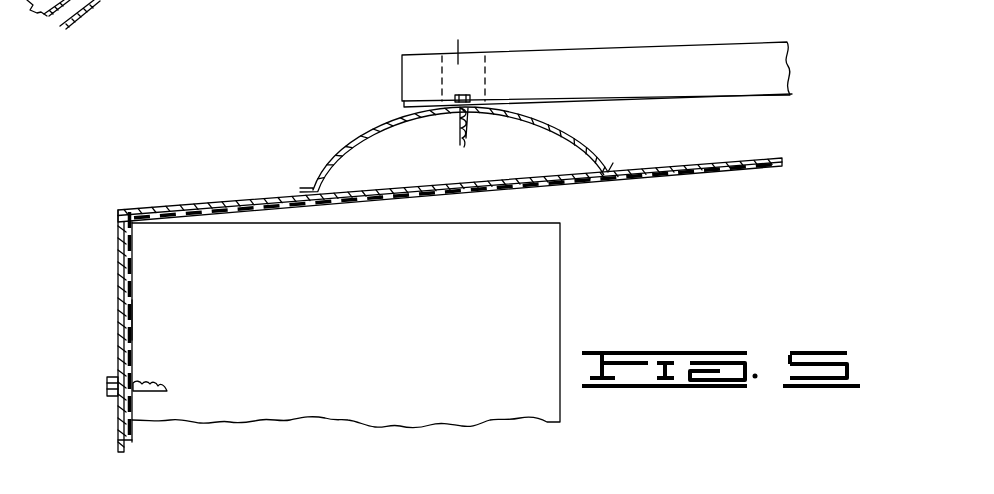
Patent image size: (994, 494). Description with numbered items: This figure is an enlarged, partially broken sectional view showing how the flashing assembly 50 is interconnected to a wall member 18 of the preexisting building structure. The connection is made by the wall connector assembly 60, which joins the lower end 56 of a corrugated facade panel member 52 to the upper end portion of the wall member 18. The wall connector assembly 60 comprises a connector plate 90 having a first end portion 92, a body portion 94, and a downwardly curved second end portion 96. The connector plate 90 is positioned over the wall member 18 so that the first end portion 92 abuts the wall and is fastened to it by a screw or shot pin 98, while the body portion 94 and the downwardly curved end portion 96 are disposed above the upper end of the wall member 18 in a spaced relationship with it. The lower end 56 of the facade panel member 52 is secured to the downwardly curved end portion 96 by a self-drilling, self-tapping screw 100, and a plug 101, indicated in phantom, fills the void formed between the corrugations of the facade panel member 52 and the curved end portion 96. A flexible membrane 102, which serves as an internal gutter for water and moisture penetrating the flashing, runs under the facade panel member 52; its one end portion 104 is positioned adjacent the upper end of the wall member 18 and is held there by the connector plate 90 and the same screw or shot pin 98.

The wall member 18 is at (336, 337).
The flashing assembly 50 is at (597, 73).
The facade panel member 52 is at (690, 44).
The lower end of facade panel member 56 is at (458, 40).
The wall connector assembly 60 is at (412, 299).
The connector plate 90 is at (122, 331).
The first end portion of connector plate 92 is at (118, 419).
The body portion of connector plate 94 is at (227, 197).
The downwardly curved second end portion of connector plate 96 is at (578, 141).
The screw or shot pin 98 is at (107, 397).
The self-drilling, self-tapping screw 100 is at (463, 95).
The plug 101 is at (470, 65).
The flexible membrane 102 is at (98, 0).
The one end portion of flexible membrane 104 is at (133, 318).